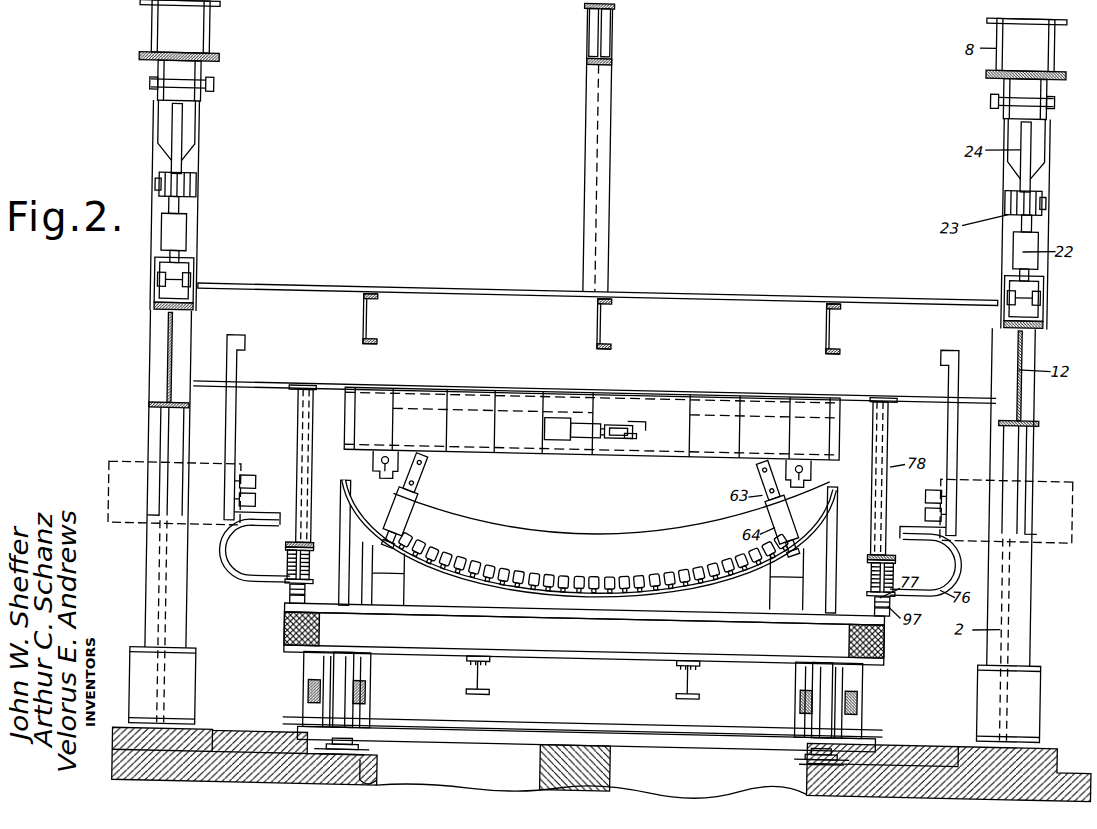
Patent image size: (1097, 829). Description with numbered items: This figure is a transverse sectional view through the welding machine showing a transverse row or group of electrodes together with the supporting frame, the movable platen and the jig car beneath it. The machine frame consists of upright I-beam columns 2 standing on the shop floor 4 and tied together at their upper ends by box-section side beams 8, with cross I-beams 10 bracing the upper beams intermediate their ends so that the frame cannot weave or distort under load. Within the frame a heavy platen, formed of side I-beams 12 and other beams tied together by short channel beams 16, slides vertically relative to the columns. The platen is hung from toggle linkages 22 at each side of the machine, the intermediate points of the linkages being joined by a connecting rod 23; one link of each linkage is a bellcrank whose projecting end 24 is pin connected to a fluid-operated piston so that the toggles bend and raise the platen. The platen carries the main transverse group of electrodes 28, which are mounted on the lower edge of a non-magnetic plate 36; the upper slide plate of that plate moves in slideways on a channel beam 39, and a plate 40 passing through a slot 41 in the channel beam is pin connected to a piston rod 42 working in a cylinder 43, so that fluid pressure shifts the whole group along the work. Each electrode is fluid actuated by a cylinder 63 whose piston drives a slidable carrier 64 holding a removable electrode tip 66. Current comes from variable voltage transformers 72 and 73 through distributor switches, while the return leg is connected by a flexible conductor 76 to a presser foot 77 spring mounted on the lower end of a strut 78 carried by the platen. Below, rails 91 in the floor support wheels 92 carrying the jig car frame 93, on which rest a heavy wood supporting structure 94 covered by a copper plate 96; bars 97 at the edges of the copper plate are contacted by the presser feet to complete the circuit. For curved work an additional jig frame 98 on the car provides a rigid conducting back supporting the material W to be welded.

The upright I-beam column 2 is at (152, 579).
The shop floor 4 is at (976, 730).
The side beam 8 is at (150, 27).
The cross I-beam 10 is at (579, 1).
The side I-beam 12 is at (167, 345).
The channel beam 16 is at (371, 317).
The toggle linkage 22 is at (181, 232).
The connecting rod 23 is at (184, 185).
The projecting end 24 is at (177, 130).
The main transverse group of electrodes 28 is at (590, 545).
The non-magnetic plate 36 is at (611, 505).
The channel beam 39 is at (638, 425).
The plate 40 is at (631, 409).
The slot 41 is at (631, 428).
The piston rod 42 is at (601, 429).
The cylinder 43 is at (568, 432).
The fluid pressure cylinder 63 is at (419, 474).
The slidable carrier 64 is at (402, 505).
The electrode tip 66 is at (448, 563).
The transformer 72 is at (111, 487).
The transformer 73 is at (1051, 470).
The flexible conductor 76 is at (231, 555).
The presser foot 77 is at (299, 584).
The strut 78 is at (299, 452).
The rail 91 is at (350, 718).
The wheel 92 is at (347, 663).
The jig car frame 93 is at (583, 694).
The wood supporting structure 94 is at (584, 638).
The copper plate 96 is at (683, 597).
The bar 97 is at (295, 595).
The jig frame 98 is at (767, 579).
The material to be welded W is at (352, 494).